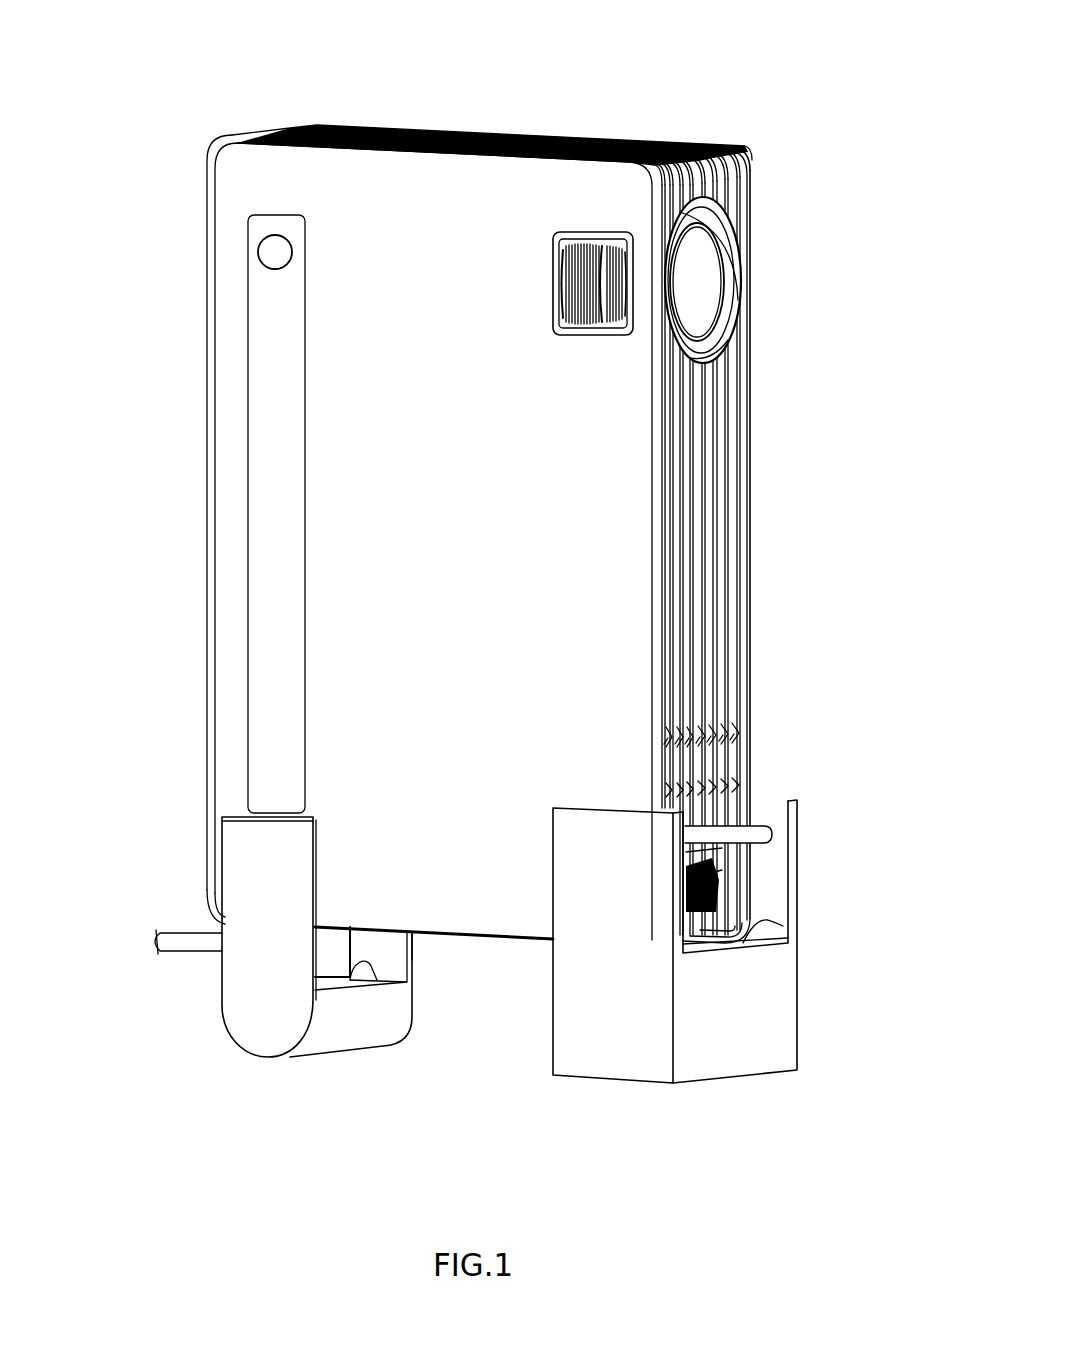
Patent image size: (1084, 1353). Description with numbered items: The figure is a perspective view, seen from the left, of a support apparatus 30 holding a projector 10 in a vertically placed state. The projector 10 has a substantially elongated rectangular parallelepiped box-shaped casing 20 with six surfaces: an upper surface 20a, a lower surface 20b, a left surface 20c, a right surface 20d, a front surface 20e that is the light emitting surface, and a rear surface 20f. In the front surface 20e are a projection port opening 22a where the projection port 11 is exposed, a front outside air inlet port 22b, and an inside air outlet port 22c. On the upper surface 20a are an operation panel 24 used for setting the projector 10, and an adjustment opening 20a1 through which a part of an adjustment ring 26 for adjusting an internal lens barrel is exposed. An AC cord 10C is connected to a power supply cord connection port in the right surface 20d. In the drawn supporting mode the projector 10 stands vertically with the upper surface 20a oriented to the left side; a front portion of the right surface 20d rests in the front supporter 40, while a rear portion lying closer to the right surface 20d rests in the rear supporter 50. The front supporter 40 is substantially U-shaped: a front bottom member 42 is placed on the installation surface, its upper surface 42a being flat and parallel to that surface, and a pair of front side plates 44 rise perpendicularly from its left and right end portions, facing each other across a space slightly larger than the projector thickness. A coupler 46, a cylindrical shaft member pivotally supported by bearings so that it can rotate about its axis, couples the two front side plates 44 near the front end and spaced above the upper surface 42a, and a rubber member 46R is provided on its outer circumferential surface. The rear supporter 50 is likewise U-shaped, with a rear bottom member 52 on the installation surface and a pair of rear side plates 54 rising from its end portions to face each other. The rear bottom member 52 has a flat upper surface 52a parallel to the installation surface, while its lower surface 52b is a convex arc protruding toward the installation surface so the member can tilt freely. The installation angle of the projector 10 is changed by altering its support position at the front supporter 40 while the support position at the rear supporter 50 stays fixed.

The projector 10 is at (252, 100).
The AC cord 10C is at (185, 932).
The projection port 11 is at (700, 272).
The casing 20 is at (472, 538).
The upper surface 20a is at (390, 460).
The adjustment opening 20a1 is at (580, 240).
The lower surface 20b is at (757, 541).
The left surface 20c is at (428, 130).
The right surface 20d is at (457, 940).
The front surface 20e is at (723, 585).
The rear surface 20f is at (190, 494).
The projection port opening 22a is at (730, 340).
The front outside air inlet port 22b is at (685, 655).
The inside air outlet port 22c is at (712, 820).
The operation panel 24 is at (275, 358).
The adjustment ring 26 is at (607, 245).
The support apparatus 30 is at (277, 1012).
The front supporter 40 is at (698, 1011).
The front bottom member 42 is at (695, 941).
The upper surface of front bottom member 42a is at (770, 880).
The front side plates 44 is at (770, 880).
The coupler 46 is at (747, 836).
The rubber member 46R is at (718, 838).
The rear supporter 50 is at (249, 1070).
The rear bottom member 52 is at (351, 1065).
The upper surface of rear bottom member 52a is at (377, 982).
The lower surface of rear bottom member 52b is at (351, 1060).
The rear side plates 54 is at (377, 945).